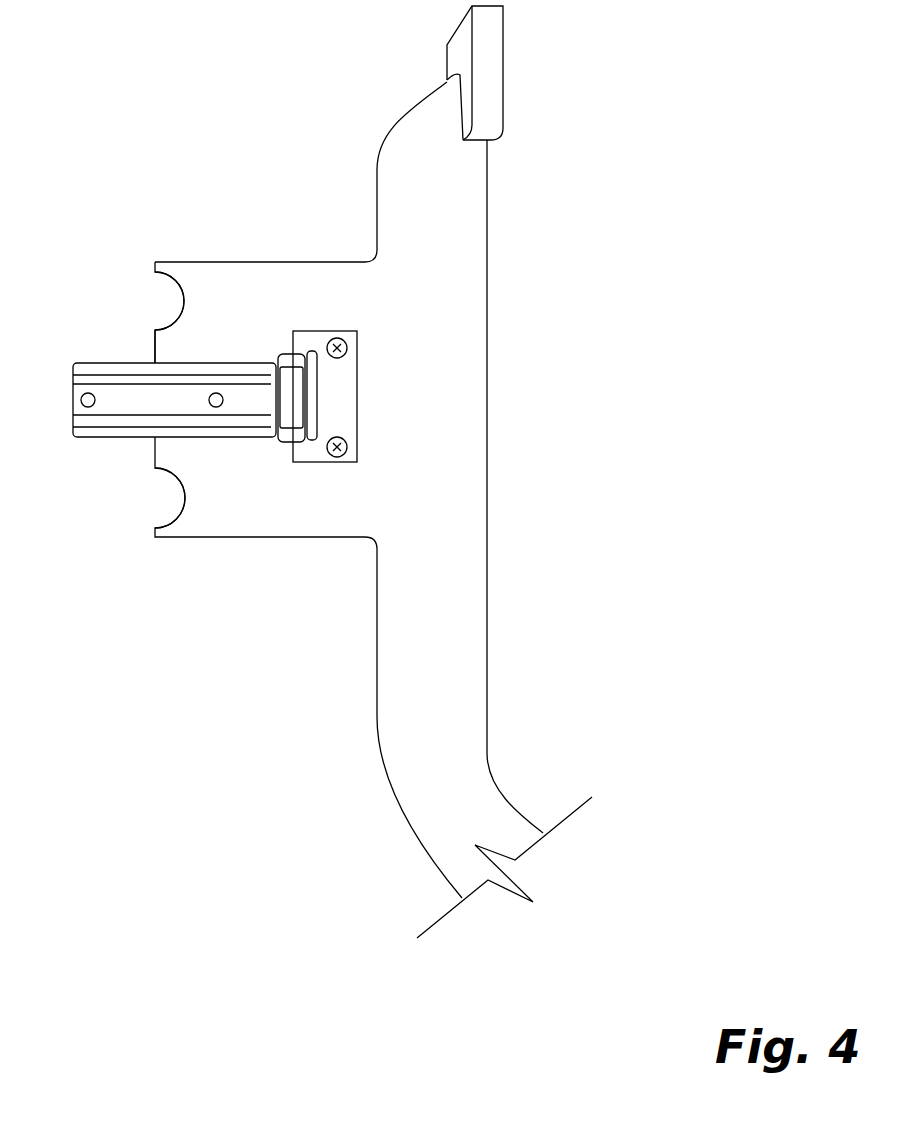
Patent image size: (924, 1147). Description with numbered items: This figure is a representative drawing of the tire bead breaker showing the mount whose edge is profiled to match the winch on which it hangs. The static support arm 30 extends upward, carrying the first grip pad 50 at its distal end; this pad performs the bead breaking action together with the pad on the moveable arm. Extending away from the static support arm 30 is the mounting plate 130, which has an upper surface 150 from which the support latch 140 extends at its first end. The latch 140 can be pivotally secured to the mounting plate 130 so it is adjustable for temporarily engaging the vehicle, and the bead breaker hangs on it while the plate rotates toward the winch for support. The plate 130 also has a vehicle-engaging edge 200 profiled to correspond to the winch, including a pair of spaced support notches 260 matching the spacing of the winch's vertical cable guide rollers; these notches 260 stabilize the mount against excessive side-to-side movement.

The static support arm 30 is at (438, 612).
The first grip pad 50 is at (490, 83).
The mounting plate 130 is at (405, 352).
The support latch 140 is at (160, 400).
The upper surface 150 is at (245, 315).
The vehicle-engaging edge 200 is at (150, 350).
The support notches 260 is at (166, 306).